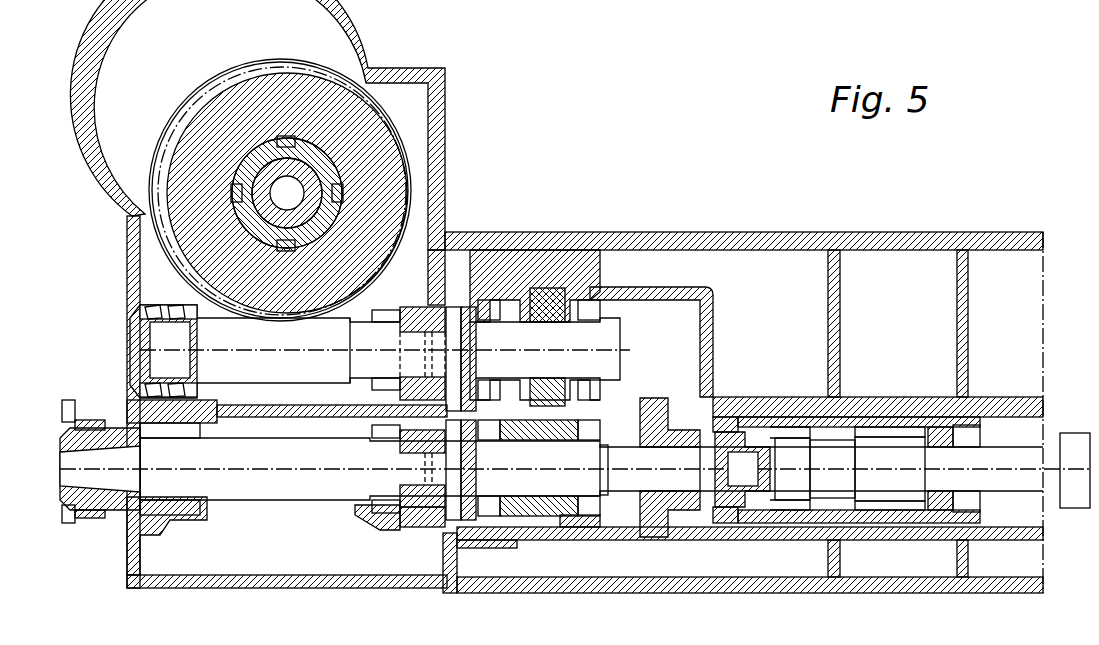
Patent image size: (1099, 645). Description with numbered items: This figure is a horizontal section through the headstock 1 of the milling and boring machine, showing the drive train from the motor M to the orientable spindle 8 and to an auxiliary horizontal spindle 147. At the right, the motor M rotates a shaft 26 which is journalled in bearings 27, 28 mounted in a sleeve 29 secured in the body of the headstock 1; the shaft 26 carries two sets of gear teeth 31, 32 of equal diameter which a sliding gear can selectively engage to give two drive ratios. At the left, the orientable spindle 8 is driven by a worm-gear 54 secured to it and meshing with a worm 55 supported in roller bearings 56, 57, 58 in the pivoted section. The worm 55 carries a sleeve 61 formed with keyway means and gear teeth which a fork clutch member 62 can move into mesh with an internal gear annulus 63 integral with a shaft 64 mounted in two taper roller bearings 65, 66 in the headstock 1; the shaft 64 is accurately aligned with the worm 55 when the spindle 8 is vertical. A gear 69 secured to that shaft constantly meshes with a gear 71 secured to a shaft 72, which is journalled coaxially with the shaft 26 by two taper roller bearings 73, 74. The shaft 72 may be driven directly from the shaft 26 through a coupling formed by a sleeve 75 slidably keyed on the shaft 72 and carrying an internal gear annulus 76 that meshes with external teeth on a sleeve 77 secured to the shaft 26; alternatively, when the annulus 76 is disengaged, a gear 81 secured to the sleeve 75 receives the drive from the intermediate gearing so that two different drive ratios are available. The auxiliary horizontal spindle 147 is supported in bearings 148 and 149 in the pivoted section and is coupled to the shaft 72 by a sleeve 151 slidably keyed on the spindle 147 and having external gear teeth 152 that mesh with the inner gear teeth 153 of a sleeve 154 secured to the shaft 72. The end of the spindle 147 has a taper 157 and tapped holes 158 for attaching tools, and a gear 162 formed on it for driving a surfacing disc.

The headstock 1 is at (868, 242).
The secondary spindle 8 is at (247, 160).
The shaft 26 is at (1003, 486).
The bearing 27 is at (762, 418).
The bearing 28 is at (921, 418).
The sleeve 29 is at (868, 418).
The gear teeth 31 is at (790, 448).
The gear teeth 32 is at (892, 452).
The worm-gear 54 is at (172, 160).
The worm 55 is at (271, 365).
The roller bearing 56 is at (166, 322).
The roller bearing 57 is at (160, 262).
The roller bearing 58 is at (387, 328).
The sleeve 61 is at (427, 328).
The fork clutch member 62 is at (450, 292).
The internal gear annulus 63 is at (476, 345).
The shaft 64 is at (594, 352).
The taper roller bearing 65 is at (500, 328).
The taper roller bearing 66 is at (598, 296).
The gear 69 is at (548, 288).
The gear 71 is at (548, 520).
The shaft 72 is at (523, 540).
The taper roller bearing 73 is at (493, 540).
The taper roller bearing 74 is at (601, 494).
The sleeve 75 is at (668, 412).
The internal gear annulus 76 is at (722, 522).
The sleeve 77 is at (753, 525).
The gear 81 is at (647, 534).
The auxiliary horizontal spindle 147 is at (246, 490).
The bearing 148 is at (140, 530).
The bearing 149 is at (384, 508).
The sleeve 151 is at (427, 500).
The external gear teeth 152 is at (427, 437).
The inner gear teeth 153 is at (457, 548).
The sleeve 154 is at (470, 470).
The taper 157 is at (75, 468).
The tapped holes 158 is at (78, 435).
The gear 162 is at (90, 506).
The motor M is at (1075, 440).